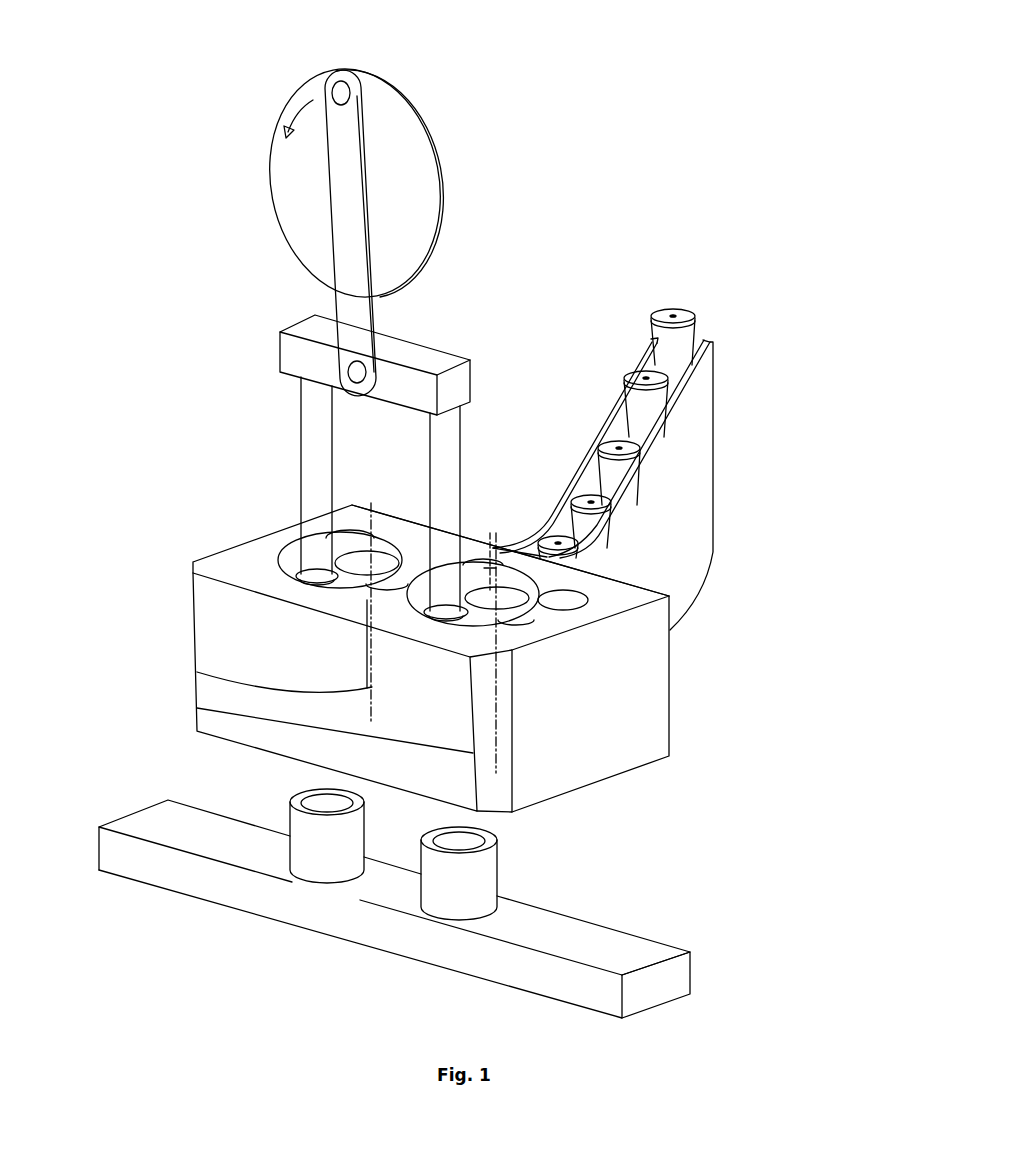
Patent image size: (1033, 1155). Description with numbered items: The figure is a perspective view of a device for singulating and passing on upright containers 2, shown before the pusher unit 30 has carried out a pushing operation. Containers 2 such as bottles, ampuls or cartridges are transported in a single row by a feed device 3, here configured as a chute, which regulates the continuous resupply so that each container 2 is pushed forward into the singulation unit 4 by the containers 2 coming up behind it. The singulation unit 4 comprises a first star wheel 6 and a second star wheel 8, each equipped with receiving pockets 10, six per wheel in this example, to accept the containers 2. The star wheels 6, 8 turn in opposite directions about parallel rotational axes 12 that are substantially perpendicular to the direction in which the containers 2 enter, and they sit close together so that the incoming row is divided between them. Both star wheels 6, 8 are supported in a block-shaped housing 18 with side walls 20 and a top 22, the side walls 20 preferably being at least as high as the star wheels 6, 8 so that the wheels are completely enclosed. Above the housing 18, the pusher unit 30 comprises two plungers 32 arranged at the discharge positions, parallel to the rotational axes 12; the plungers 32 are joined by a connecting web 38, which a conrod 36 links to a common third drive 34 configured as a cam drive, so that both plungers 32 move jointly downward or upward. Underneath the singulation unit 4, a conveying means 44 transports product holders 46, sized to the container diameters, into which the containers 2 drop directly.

The pusher unit 30 is at (467, 128).
The third drive 34 is at (427, 210).
The conrod 36 is at (345, 258).
The connecting web 38 is at (323, 367).
The plunger 32 is at (317, 518).
The singulation unit 4 is at (140, 430).
The housing 18 is at (153, 574).
The side walls 20 is at (222, 625).
The rotational axes 12 is at (197, 708).
The first star wheel 6 is at (290, 570).
The receiving pockets 10 is at (518, 622).
The second star wheel 8 is at (590, 572).
The top 22 is at (615, 593).
The feed device 3 is at (625, 552).
The containers 2 is at (612, 478).
The conveying means 44 is at (240, 842).
The product holders 46 is at (327, 868).